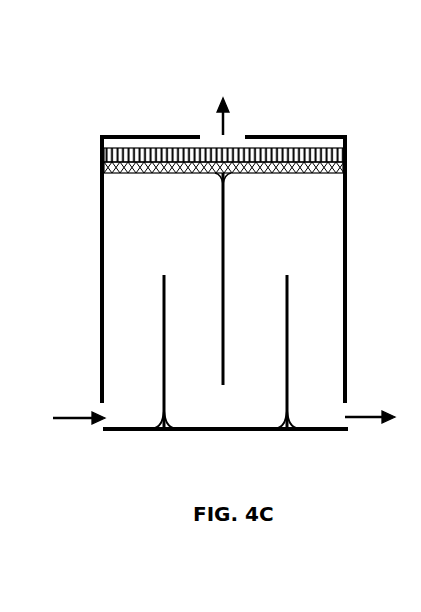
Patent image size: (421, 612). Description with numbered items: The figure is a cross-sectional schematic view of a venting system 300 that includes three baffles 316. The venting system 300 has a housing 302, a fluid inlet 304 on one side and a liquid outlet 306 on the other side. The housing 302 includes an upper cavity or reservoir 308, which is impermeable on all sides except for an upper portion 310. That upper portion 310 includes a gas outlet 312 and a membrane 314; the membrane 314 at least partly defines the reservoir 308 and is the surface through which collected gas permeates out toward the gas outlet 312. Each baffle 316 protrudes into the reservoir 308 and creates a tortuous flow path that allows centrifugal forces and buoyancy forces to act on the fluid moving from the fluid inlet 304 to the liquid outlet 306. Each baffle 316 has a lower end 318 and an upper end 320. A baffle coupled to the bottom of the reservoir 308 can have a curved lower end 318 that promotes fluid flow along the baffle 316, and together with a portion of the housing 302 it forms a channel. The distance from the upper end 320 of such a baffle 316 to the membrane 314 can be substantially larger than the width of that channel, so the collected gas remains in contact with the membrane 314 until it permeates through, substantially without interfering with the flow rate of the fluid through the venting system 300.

The venting system 300 is at (76, 98).
The housing 302 is at (101, 278).
The fluid inlet 304 is at (102, 405).
The liquid outlet 306 is at (348, 410).
The reservoir 308 is at (190, 225).
The upper portion 310 is at (285, 135).
The gas outlet 312 is at (207, 139).
The membrane 314 is at (337, 157).
The baffle 316 is at (227, 250).
The lower end 318 is at (226, 174).
The upper end 320 is at (163, 272).